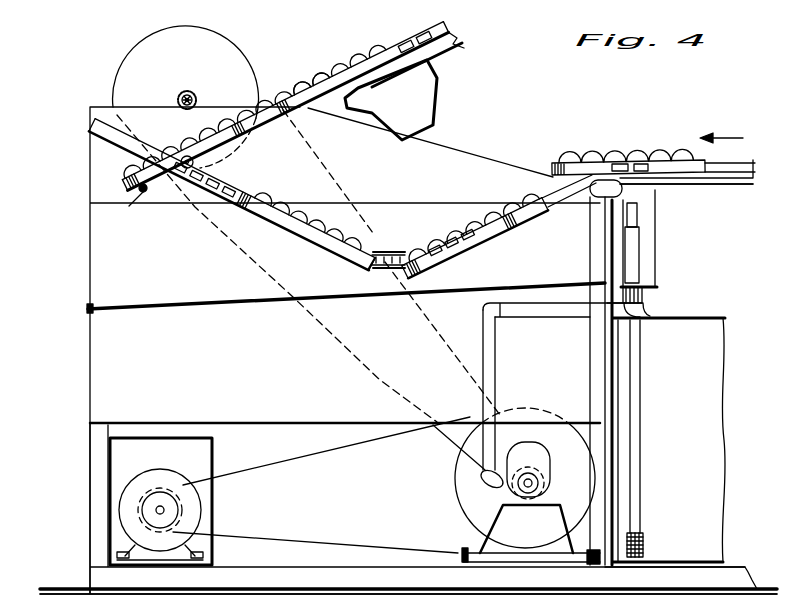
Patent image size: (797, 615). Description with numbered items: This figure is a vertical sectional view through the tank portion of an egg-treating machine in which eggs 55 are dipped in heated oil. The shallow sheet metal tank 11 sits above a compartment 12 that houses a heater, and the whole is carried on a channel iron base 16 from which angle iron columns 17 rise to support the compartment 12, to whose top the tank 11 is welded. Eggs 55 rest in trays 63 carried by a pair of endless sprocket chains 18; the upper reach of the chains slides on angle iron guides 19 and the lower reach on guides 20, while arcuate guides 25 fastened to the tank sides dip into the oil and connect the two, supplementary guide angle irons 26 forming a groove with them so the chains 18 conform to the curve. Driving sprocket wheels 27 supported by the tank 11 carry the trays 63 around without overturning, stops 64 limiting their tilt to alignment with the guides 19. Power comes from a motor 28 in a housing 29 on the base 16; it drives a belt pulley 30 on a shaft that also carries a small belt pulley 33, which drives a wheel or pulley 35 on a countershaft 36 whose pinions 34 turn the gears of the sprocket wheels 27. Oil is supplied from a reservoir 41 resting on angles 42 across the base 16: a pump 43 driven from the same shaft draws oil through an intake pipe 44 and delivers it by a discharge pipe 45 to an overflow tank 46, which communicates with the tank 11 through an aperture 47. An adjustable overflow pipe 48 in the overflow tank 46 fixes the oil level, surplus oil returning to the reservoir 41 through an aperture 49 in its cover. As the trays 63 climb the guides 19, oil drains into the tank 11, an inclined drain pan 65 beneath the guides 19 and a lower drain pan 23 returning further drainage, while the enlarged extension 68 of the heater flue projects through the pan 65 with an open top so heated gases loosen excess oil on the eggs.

The tank 11 is at (100, 262).
The compartment 12 is at (346, 332).
The channel iron base 16 is at (217, 580).
The angle iron columns 17 is at (90, 518).
The sprocket chains 18 is at (398, 255).
The angle iron guides 19 is at (416, 37).
The angle iron guides 20 is at (731, 180).
The drain pan 23 is at (706, 186).
The arcuate guides 25 is at (390, 268).
The supplementary guide angle irons 26 is at (378, 250).
The driving sprocket wheels 27 is at (200, 160).
The motor 28 is at (163, 472).
The housing 29 is at (213, 503).
The belt pulley 30 is at (457, 493).
The small belt pulley 33 is at (500, 495).
The pinions 34 is at (180, 93).
The wheel or pulley 35 is at (243, 47).
The countershaft 36 is at (196, 93).
The reservoir 41 is at (722, 462).
The angles 42 is at (620, 566).
The pump 43 is at (545, 457).
The intake pipe 44 is at (492, 398).
The discharge pipe 45 is at (592, 349).
The overflow tank 46 is at (656, 248).
The aperture 47 is at (606, 278).
The overflow pipe 48 is at (640, 236).
The aperture 49 is at (648, 316).
The eggs 55 is at (386, 42).
The trays 63 is at (122, 183).
The stops 64 is at (125, 208).
The inclined drain pan 65 is at (458, 56).
The enlarged extension 68 is at (437, 107).